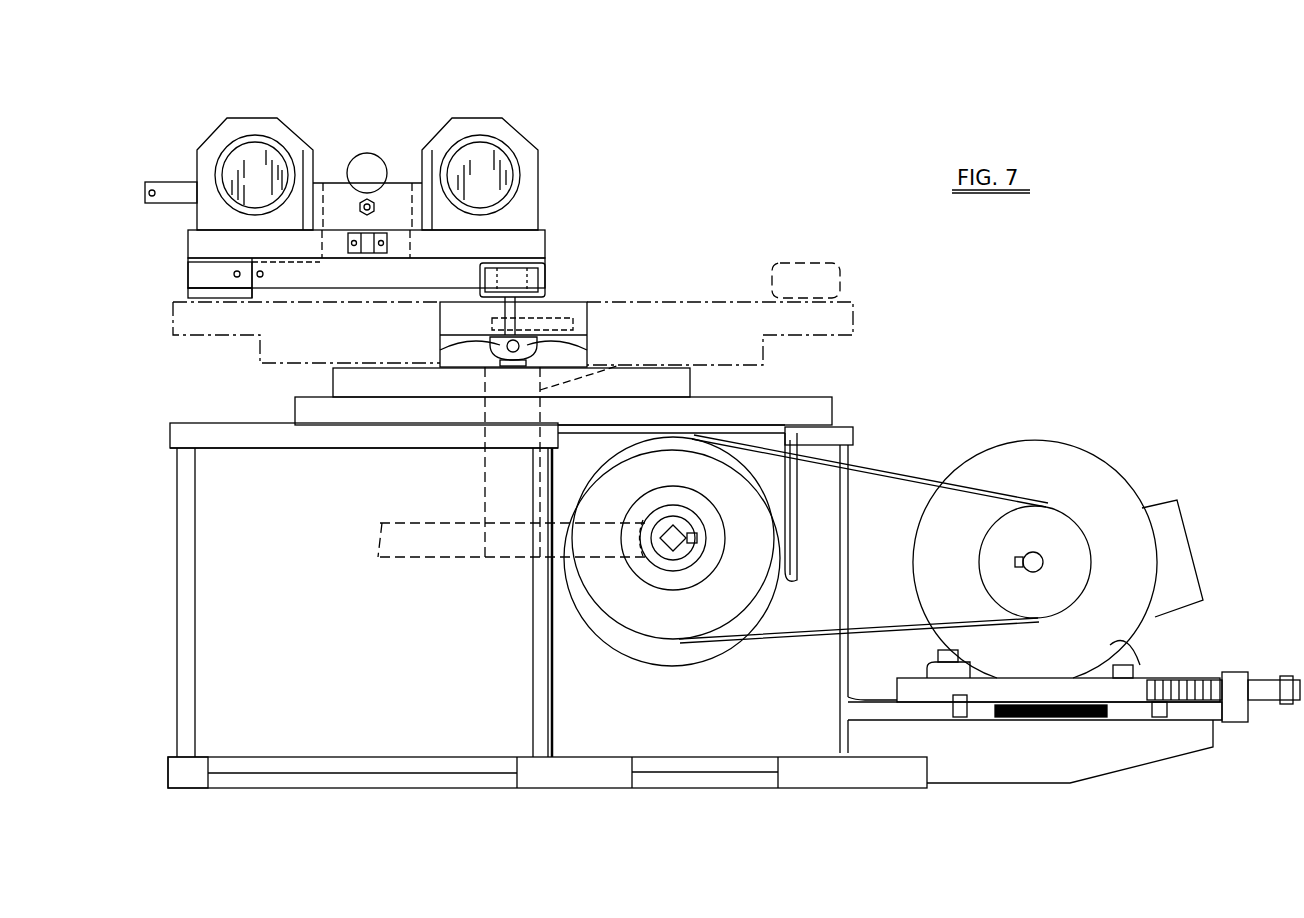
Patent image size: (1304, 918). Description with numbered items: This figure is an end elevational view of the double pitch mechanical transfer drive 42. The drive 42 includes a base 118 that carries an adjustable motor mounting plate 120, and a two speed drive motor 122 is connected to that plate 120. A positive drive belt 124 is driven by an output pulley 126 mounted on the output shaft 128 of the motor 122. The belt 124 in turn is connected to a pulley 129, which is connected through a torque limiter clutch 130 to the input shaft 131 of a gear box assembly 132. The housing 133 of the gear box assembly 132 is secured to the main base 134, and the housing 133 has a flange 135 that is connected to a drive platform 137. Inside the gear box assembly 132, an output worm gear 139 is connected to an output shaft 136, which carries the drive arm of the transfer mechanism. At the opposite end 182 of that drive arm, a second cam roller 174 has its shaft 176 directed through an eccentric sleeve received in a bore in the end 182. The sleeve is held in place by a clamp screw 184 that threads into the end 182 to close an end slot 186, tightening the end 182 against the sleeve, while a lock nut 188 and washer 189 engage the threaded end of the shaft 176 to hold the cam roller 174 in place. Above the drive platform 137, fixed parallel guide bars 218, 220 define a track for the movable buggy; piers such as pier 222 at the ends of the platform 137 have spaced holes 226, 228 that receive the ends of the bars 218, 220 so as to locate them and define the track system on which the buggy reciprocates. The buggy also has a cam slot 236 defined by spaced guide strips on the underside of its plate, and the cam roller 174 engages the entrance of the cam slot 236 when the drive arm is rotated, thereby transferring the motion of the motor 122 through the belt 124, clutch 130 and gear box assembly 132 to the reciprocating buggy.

The drive 42 is at (862, 438).
The base 118 is at (955, 772).
The adjustable motor mounting plate 120 is at (1130, 692).
The two speed drive motor 122 is at (1092, 467).
The positive drive belt 124 is at (912, 482).
The output pulley 126 is at (990, 568).
The output shaft 128 is at (1045, 560).
The pulley 129 is at (597, 588).
The torque limiter clutch 130 is at (648, 505).
The input shaft 131 is at (680, 560).
The gear box assembly 132 is at (795, 405).
The housing 133 is at (765, 600).
The main base 134 is at (865, 777).
The flange 135 is at (665, 375).
The output shaft 136 is at (600, 378).
The drive platform 137 is at (387, 445).
The output worm gear 139 is at (430, 548).
The second cam roller 174 is at (195, 275).
The shaft 176 is at (548, 303).
The opposite end 182 is at (440, 307).
The clamp screw 184 is at (590, 300).
The end slot 186 is at (545, 342).
The lock nut 188 is at (495, 348).
The washer 189 is at (495, 345).
The guide bar 218 is at (287, 157).
The guide bar 220 is at (500, 172).
The pier 222 is at (278, 128).
The hole 226 is at (255, 140).
The hole 228 is at (498, 157).
The cam slot 236 is at (455, 275).